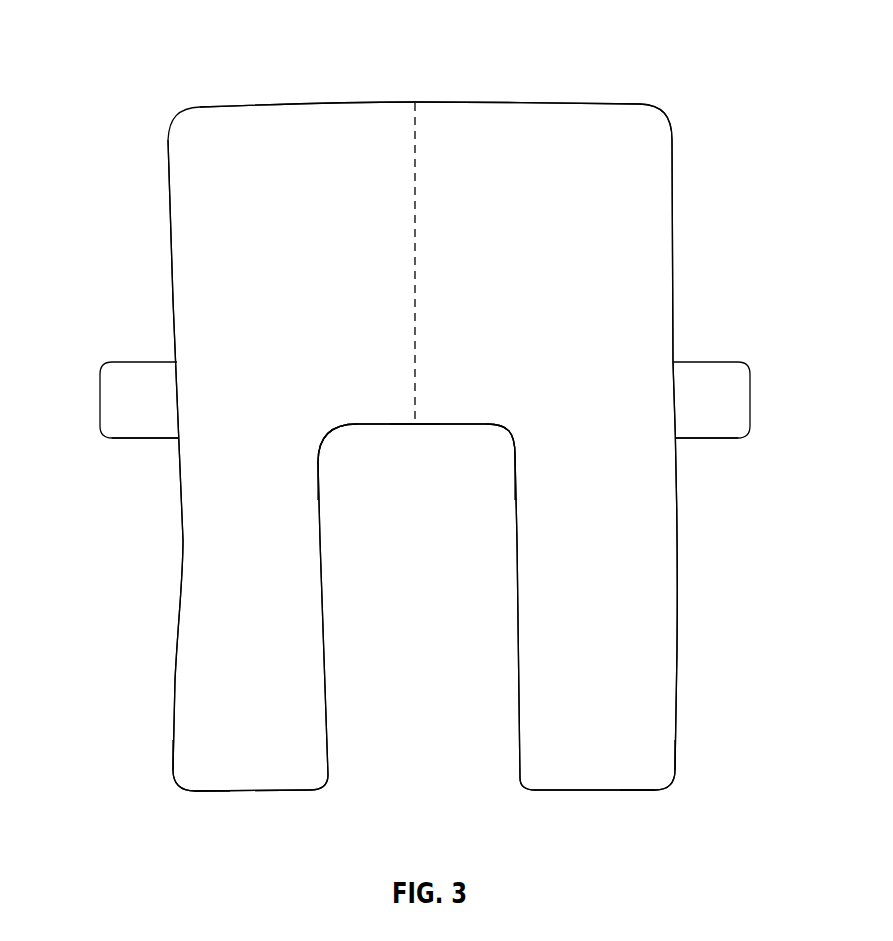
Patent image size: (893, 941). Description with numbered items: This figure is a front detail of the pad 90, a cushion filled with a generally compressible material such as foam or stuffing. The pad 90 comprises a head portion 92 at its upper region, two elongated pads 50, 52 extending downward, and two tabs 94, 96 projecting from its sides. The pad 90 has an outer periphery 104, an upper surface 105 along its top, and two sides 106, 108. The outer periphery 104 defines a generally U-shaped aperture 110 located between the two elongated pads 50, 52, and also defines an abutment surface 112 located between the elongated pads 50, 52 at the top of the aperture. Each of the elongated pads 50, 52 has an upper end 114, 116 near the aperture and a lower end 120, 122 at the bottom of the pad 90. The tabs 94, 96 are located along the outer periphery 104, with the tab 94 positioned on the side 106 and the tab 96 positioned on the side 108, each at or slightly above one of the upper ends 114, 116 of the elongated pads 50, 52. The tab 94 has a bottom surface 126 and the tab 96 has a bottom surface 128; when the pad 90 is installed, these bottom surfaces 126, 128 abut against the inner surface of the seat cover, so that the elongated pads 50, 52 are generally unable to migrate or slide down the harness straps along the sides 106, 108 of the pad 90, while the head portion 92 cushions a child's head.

The pad 90 is at (683, 68).
The head portion 92 is at (672, 140).
The tab 94 is at (110, 390).
The tab 96 is at (742, 390).
The outer periphery 104 is at (533, 102).
The upper surface 105 is at (317, 105).
The side 106 is at (168, 222).
The side 108 is at (672, 238).
The U-shaped aperture 110 is at (450, 450).
The abutment surface 112 is at (412, 425).
The upper end 114 is at (263, 437).
The upper end 116 is at (587, 437).
The lower end 120 is at (182, 743).
The lower end 122 is at (668, 743).
The bottom surface 126 is at (148, 440).
The bottom surface 128 is at (703, 440).
The elongated pad 50 is at (312, 592).
The elongated pad 52 is at (533, 590).